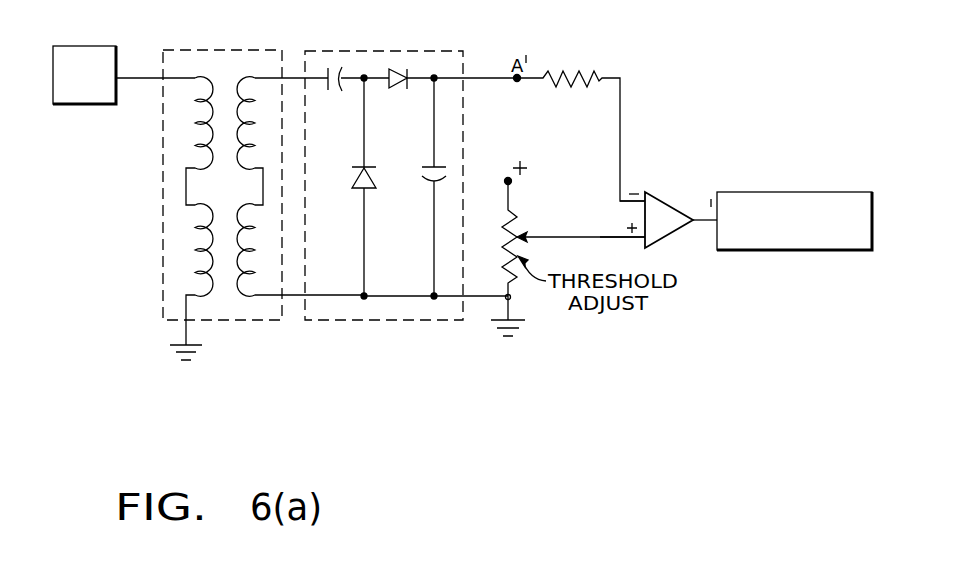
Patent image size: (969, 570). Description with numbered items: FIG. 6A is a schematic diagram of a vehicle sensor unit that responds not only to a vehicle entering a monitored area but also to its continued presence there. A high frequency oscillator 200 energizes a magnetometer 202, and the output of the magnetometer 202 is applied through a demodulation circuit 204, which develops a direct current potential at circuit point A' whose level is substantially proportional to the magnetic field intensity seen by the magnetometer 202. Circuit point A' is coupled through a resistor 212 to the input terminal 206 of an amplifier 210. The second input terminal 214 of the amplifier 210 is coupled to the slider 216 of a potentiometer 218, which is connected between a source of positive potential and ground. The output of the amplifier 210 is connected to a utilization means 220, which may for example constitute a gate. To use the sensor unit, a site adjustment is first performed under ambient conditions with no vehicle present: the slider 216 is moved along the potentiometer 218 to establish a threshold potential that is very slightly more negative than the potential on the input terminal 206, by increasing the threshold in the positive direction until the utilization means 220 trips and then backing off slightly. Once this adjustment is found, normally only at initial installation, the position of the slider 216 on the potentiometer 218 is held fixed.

The high frequency oscillator 200 is at (80, 105).
The magnetometer 202 is at (243, 50).
The demodulation circuit 204 is at (428, 51).
The input terminal 206 is at (628, 204).
The amplifier 210 is at (650, 193).
The resistor 212 is at (585, 75).
The second input terminal 214 is at (610, 239).
The slider 216 is at (530, 239).
The potentiometer 218 is at (510, 286).
The utilization means 220 is at (823, 192).